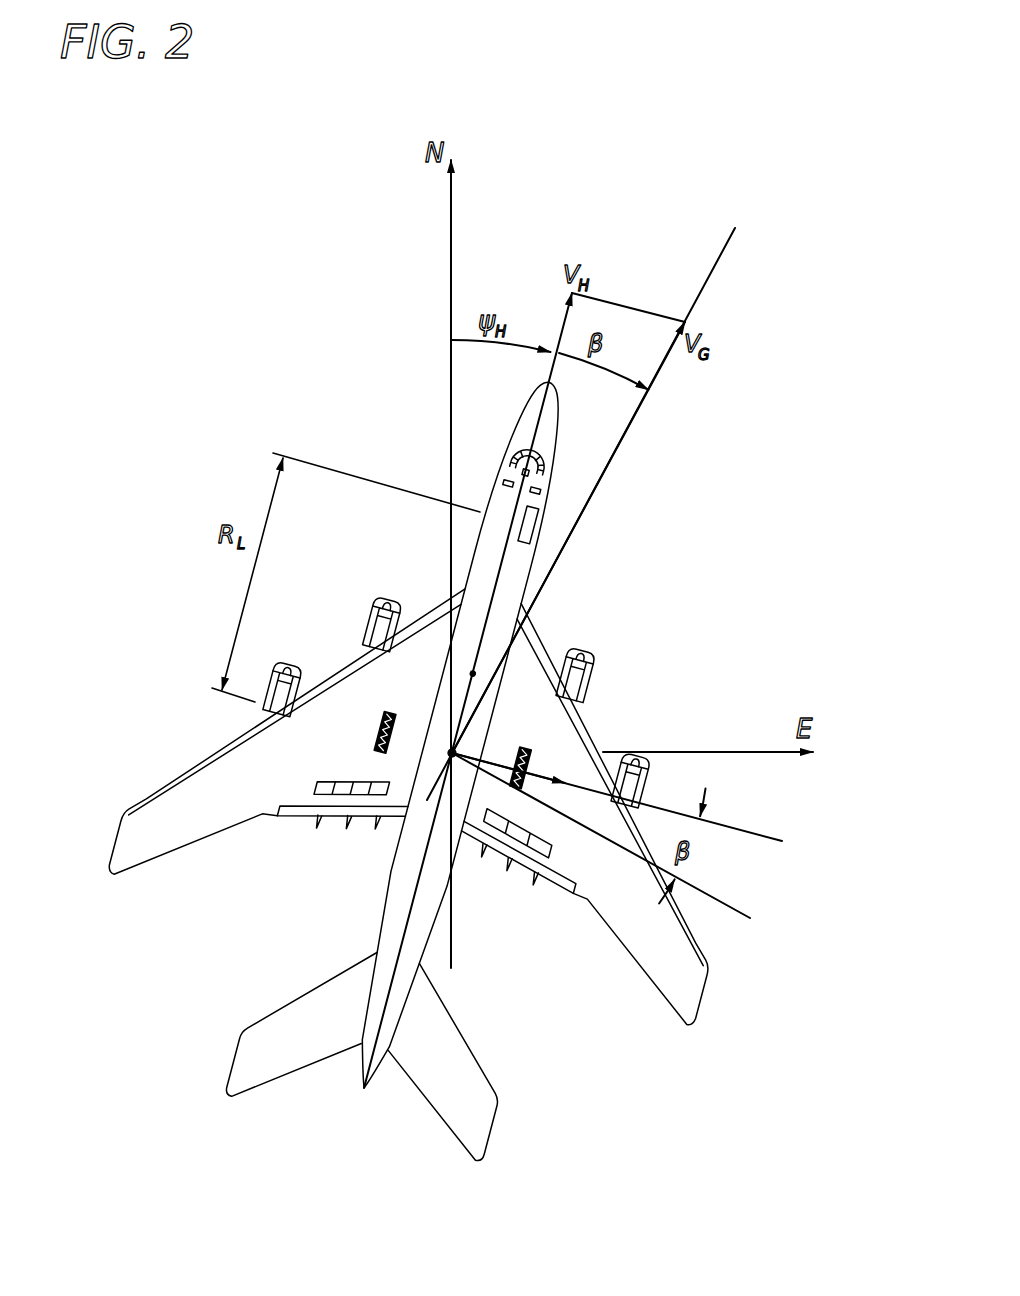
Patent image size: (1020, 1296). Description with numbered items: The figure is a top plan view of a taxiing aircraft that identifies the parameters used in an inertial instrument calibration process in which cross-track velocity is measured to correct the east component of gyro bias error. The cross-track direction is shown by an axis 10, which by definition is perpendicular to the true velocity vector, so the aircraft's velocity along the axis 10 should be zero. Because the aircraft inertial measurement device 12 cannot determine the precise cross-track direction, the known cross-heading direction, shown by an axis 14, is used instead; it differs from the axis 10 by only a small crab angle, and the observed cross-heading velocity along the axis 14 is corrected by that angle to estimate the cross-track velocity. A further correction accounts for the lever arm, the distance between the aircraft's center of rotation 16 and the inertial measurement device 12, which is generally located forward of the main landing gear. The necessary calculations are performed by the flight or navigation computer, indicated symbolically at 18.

The cross-track axis 10 is at (745, 912).
The inertial measurement device 12 is at (531, 523).
The cross-heading axis 14 is at (769, 835).
The center of rotation 16 is at (448, 754).
The flight or navigation computer 18 is at (527, 472).